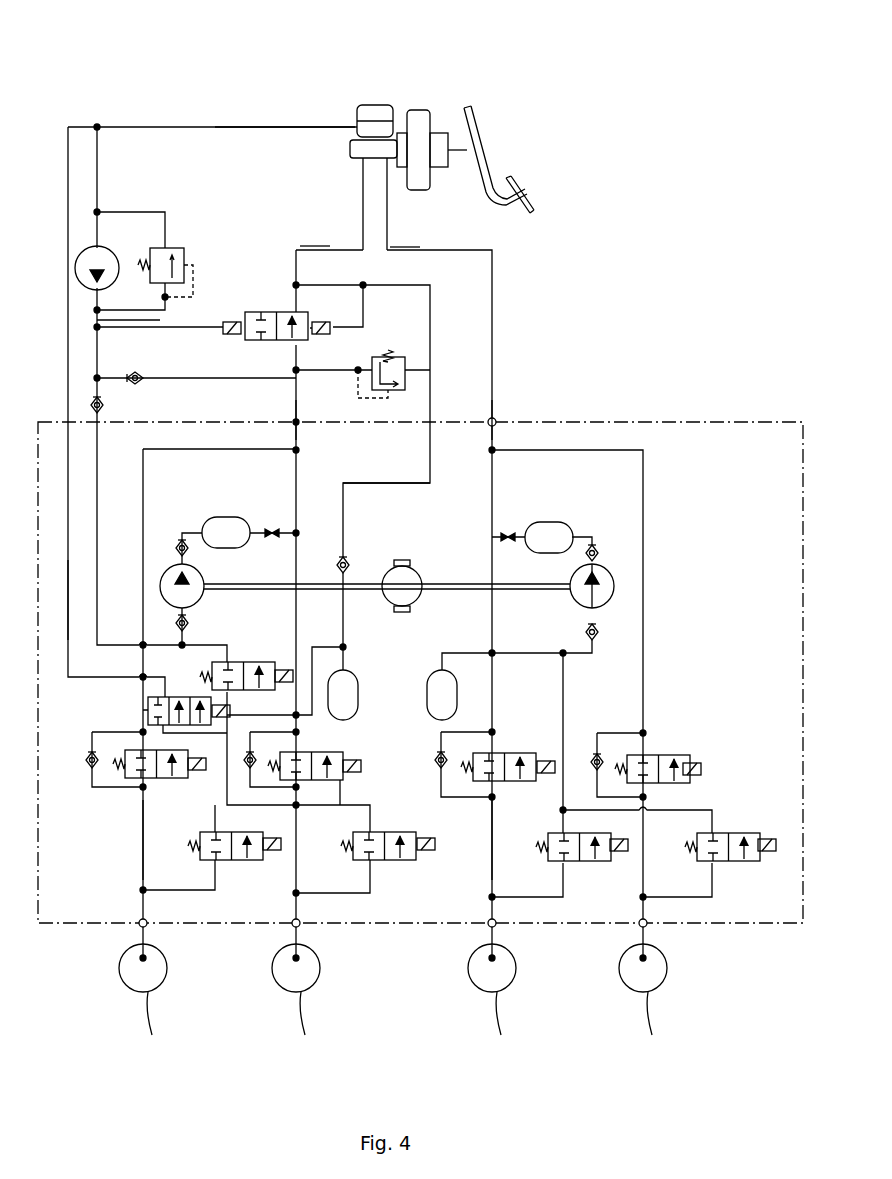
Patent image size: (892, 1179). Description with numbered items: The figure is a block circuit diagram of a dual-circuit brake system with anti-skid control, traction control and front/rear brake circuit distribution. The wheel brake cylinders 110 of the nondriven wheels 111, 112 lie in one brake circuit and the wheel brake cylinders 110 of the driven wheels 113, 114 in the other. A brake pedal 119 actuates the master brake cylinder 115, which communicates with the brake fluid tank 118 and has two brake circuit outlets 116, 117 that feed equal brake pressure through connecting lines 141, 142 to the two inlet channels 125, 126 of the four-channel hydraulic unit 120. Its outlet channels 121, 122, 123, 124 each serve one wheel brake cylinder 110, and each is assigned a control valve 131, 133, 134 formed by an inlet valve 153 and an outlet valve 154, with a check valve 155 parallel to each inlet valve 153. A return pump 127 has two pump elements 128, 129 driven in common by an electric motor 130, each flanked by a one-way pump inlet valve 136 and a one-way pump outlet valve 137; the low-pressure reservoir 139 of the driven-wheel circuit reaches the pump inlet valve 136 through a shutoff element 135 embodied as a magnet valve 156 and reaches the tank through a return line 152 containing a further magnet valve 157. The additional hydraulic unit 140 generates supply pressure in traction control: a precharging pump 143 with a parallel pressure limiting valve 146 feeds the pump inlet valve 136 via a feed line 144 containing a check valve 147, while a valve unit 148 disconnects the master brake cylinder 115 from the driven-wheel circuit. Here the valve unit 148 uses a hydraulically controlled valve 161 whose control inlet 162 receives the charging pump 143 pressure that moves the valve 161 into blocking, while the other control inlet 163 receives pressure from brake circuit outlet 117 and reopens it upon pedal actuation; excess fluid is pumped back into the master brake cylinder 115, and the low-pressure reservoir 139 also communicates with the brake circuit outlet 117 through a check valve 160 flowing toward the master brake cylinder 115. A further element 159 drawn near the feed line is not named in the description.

The wheel brake cylinder 110 is at (150, 955).
The nondriven wheel 111 is at (515, 1025).
The nondriven wheel 112 is at (663, 1025).
The driven wheel 113 is at (170, 1025).
The driven wheel 114 is at (322, 1025).
The master brake cylinder 115 is at (350, 150).
The brake circuit outlet 116 is at (398, 165).
The brake circuit outlet 117 is at (365, 165).
The brake fluid tank 118 is at (383, 115).
The brake pedal 119 is at (498, 175).
The four-channel hydraulic unit 120 is at (705, 420).
The outlet channel 121 is at (140, 920).
The outlet channel 122 is at (300, 923).
The outlet channel 123 is at (496, 923).
The outlet channel 124 is at (647, 923).
The inlet channel 125 is at (495, 422).
The inlet channel 126 is at (300, 422).
The return pump 127 is at (385, 560).
The pump element 128 is at (615, 590).
The pump element 129 is at (200, 588).
The electric motor 130 is at (420, 580).
The control valve 131 is at (515, 835).
The control valve 133 is at (140, 818).
The control valve 134 is at (365, 795).
The shutoff element 135 is at (258, 650).
The pump inlet valve 136 is at (175, 625).
The pump outlet valve 137 is at (180, 540).
The low-pressure reservoir 139 is at (352, 700).
The additional hydraulic unit 140 is at (212, 124).
The connecting line 141 is at (395, 246).
The connecting line 142 is at (328, 248).
The precharging pump 143 is at (105, 258).
The feed line 144 is at (105, 365).
The pressure limiting valve 146 is at (170, 248).
The check valve 147 is at (103, 412).
The valve unit 148 is at (383, 330).
The return line 152 is at (68, 590).
The inlet valve 153 is at (155, 780).
The outlet valve 154 is at (240, 862).
The check valve 155 is at (92, 785).
The 2/2-way magnet valve 156 is at (245, 662).
The further 2/2-way magnet valve 157 is at (182, 697).
The check valve 159 is at (148, 378).
The check valve 160 is at (338, 560).
The hydraulically controlled 2/2-way valve 161 is at (270, 310).
The control inlet 162 is at (232, 336).
The control inlet 163 is at (326, 336).